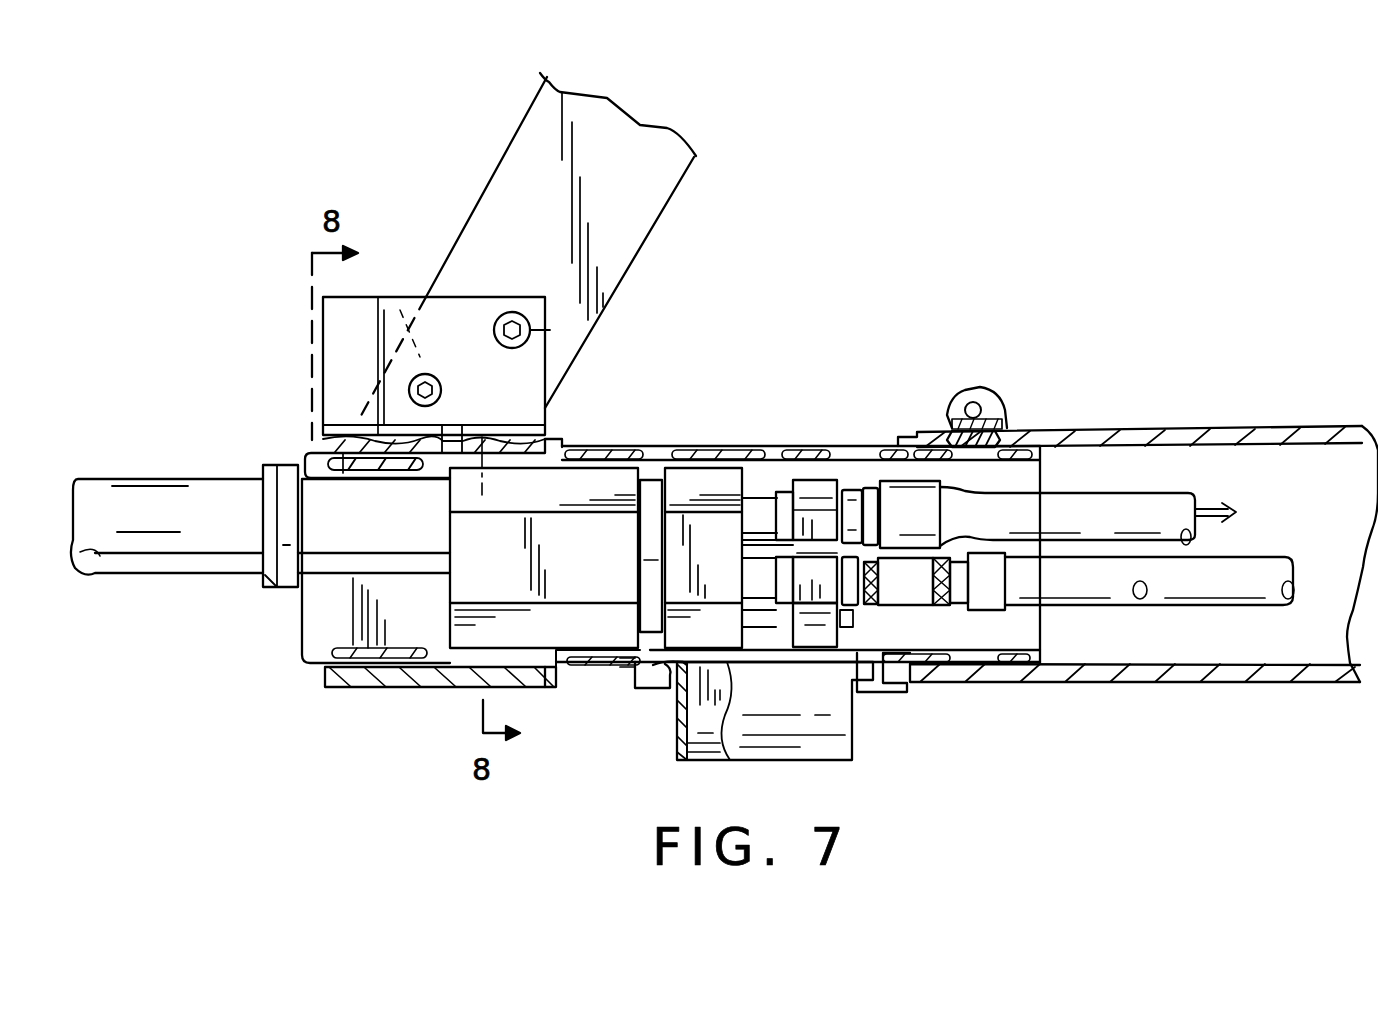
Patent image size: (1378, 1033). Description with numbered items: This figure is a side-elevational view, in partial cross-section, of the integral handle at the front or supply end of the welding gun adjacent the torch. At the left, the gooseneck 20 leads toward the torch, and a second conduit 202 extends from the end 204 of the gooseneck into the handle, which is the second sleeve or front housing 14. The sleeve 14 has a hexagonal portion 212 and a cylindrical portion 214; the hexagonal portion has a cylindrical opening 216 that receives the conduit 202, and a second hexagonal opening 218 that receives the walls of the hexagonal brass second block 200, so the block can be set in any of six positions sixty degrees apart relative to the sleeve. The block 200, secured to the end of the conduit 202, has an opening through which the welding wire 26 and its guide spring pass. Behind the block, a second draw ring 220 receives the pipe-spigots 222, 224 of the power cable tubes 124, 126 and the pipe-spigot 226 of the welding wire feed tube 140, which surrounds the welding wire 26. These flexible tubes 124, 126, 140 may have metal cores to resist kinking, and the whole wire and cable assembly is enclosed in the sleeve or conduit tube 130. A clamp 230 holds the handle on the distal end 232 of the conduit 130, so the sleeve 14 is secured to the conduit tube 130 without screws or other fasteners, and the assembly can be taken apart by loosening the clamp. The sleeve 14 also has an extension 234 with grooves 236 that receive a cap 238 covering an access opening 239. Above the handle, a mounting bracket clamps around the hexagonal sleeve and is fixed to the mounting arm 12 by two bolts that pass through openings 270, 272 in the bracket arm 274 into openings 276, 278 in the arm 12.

The mounting arm 12 is at (500, 172).
The front housing 14 is at (295, 453).
The gooseneck 20 is at (130, 562).
The welding wire 26 is at (1210, 503).
The power cable tube 124 is at (1078, 597).
The power cable tube 126 is at (1237, 590).
The conduit sleeve 130 is at (1258, 430).
The welding wire feed tube 140 is at (1077, 505).
The second block 200 is at (480, 608).
The second conduit 202 is at (348, 545).
The gooseneck end 204 is at (275, 585).
The hexagonal portion 212 is at (338, 635).
The cylindrical portion 214 is at (820, 447).
The cylindrical opening 216 is at (298, 465).
The second hexagonal opening 218 is at (563, 640).
The second draw ring 220 is at (683, 630).
The pipe-spigot 222 is at (813, 628).
The pipe-spigot 224 is at (899, 669).
The pipe-spigot 226 is at (775, 495).
The clamp 230 is at (983, 405).
The distal end 232 is at (927, 425).
The extension 234 is at (664, 690).
The grooves 236 is at (883, 687).
The cap 238 is at (760, 750).
The access opening 239 is at (782, 612).
The opening 270 is at (441, 388).
The opening 272 is at (520, 340).
The bracket arm 274 is at (333, 352).
The opening 276 is at (438, 333).
The opening 278 is at (565, 333).